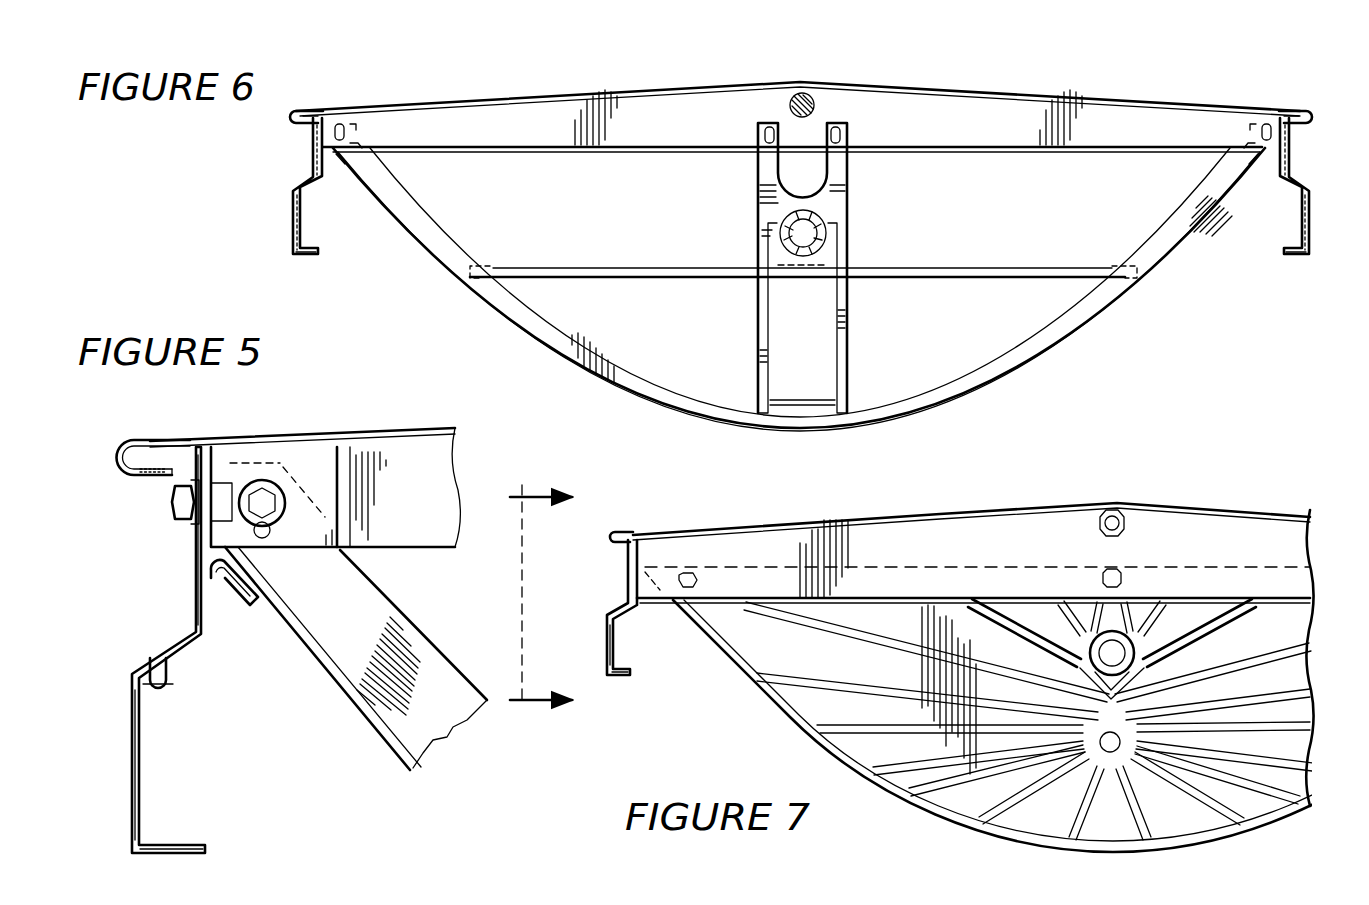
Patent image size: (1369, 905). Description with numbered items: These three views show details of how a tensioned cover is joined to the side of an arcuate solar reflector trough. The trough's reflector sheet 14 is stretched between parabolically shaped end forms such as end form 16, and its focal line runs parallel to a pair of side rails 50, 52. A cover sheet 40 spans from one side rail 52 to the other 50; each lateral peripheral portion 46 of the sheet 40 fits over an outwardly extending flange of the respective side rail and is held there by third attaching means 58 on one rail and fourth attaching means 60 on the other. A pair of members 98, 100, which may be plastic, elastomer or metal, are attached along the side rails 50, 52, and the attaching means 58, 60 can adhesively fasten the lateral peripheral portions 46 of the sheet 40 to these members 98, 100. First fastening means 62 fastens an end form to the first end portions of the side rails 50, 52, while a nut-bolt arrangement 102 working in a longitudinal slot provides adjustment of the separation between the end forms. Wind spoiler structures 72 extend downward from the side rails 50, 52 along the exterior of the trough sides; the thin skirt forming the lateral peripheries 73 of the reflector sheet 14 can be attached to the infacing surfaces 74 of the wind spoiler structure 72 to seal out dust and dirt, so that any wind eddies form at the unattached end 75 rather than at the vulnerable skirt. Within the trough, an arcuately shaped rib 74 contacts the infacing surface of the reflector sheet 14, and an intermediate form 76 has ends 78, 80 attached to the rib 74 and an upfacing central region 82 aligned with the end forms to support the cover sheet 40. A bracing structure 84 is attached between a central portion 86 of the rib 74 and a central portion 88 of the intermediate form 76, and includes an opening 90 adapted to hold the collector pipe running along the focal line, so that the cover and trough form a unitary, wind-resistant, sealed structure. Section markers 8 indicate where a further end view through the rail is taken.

In FIG. 7, the section line 8- 8 is at (558, 600).
In FIG. 5, the reflector sheet 14 is at (360, 720).
In FIG. 7, the end form 16 is at (768, 722).
In FIG. 5, the sheet 40 is at (340, 428).
In FIG. 7, the sheet 40 is at (962, 512).
In FIG. 5, the lateral peripheral portion 46 is at (122, 456).
In FIG. 7, the lateral peripheral portion 46 is at (625, 540).
In FIG. 6, the side rail 50 is at (314, 152).
In FIG. 5, the side rail 50 is at (193, 566).
In FIG. 7, the side rail 50 is at (626, 568).
In FIG. 6, the side rail 52 is at (1294, 140).
In FIG. 6, the third attaching means 58 is at (306, 108).
In FIG. 5, the third attaching means 58 is at (142, 484).
In FIG. 6, the fourth attaching means 60 is at (1298, 108).
In FIG. 5, the first fastening means 62 is at (168, 524).
In FIG. 6, the wind spoiler structure 72 is at (293, 224).
In FIG. 5, the wind spoiler structure 72 is at (133, 757).
In FIG. 7, the wind spoiler structure 72 is at (604, 641).
In FIG. 5, the lateral peripheries 73 is at (210, 652).
In FIG. 6, the arcuately shaped rib 74 is at (710, 418).
In FIG. 5, the arcuately shaped rib 74 is at (158, 676).
In FIG. 6, the unattached end 75 is at (306, 254).
In FIG. 5, the unattached end 75 is at (180, 852).
In FIG. 7, the unattached end 75 is at (620, 676).
In FIG. 6, the intermediate form 76 is at (705, 132).
In FIG. 6, the end of intermediate form 78 is at (352, 135).
In FIG. 6, the end of intermediate form 80 is at (1253, 140).
In FIG. 6, the upfacing central region 82 is at (812, 90).
In FIG. 6, the bracing structure 84 is at (852, 246).
In FIG. 6, the central portion of rib 86 is at (806, 413).
In FIG. 6, the central portion of intermediate form 88 is at (800, 128).
In FIG. 6, the opening 90 is at (818, 238).
In FIG. 5, the member 98 is at (143, 443).
In FIG. 5, the member 100 is at (143, 448).
In FIG. 5, the nut-bolt arrangement 102 is at (170, 503).